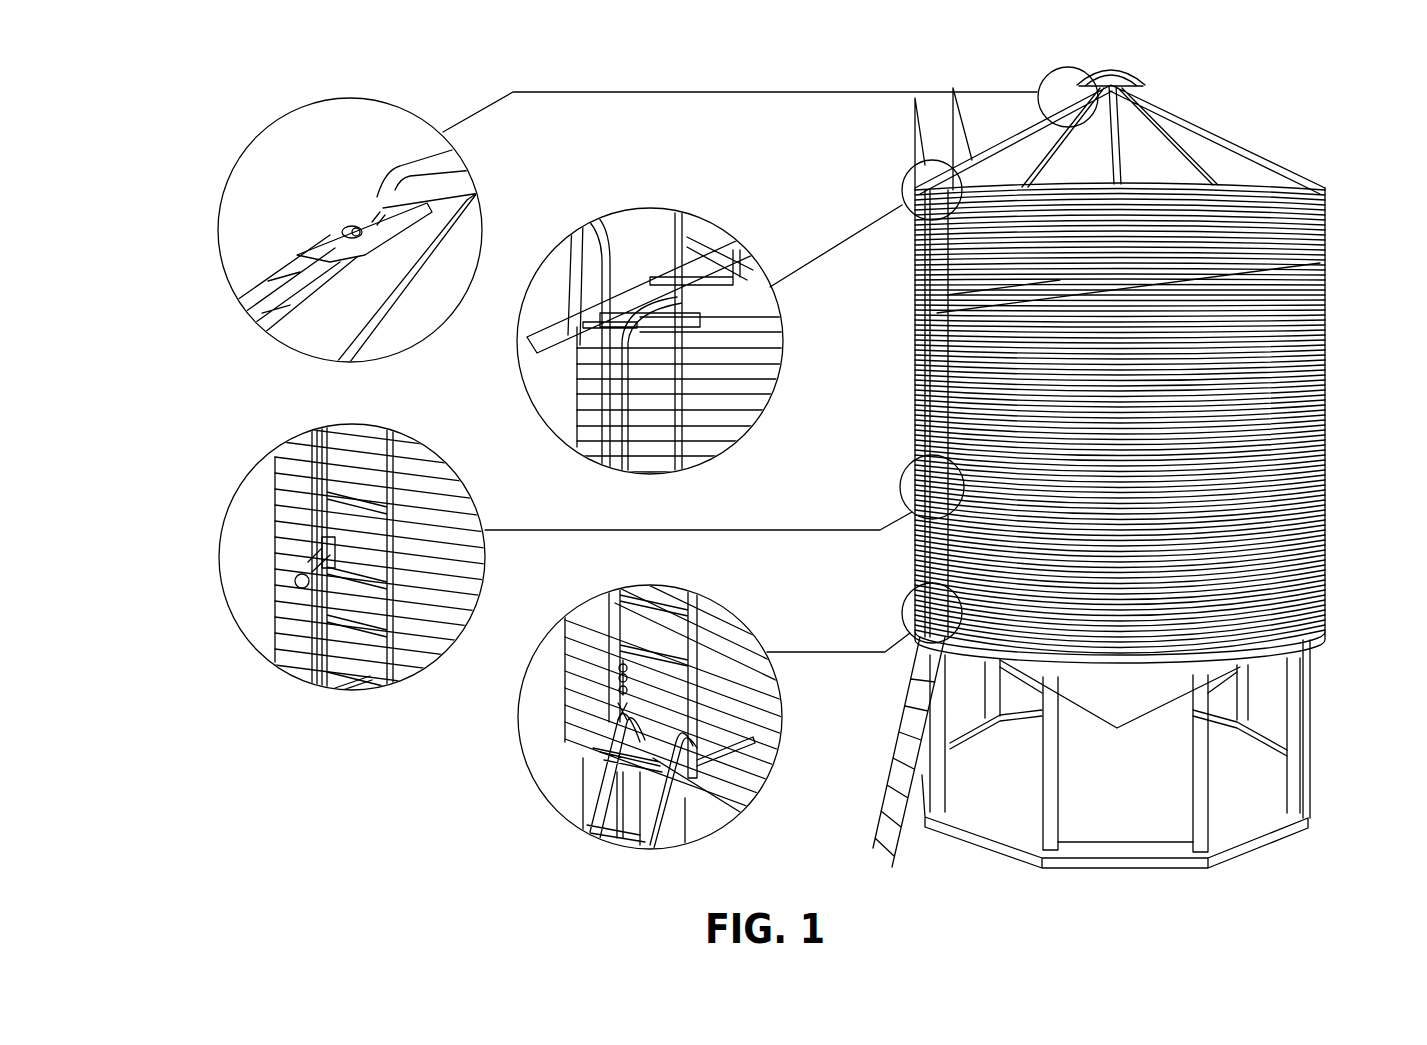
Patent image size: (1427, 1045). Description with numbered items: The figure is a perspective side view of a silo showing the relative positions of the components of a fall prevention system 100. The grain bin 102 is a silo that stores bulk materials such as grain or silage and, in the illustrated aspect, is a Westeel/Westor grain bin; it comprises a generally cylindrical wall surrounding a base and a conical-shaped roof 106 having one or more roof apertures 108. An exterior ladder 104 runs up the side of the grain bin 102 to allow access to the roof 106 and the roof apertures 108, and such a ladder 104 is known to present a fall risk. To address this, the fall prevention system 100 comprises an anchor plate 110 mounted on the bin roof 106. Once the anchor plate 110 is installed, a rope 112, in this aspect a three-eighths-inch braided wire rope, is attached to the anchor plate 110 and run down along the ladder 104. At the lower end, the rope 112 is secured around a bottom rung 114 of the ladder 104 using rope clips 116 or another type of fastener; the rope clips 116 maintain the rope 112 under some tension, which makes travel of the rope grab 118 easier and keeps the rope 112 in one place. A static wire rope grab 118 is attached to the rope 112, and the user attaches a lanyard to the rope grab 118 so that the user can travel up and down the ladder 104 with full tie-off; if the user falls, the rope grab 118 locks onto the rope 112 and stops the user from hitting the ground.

The fall prevention system 100 is at (160, 238).
The grain bin 102 is at (1252, 403).
The ladder 104 is at (1320, 263).
The roof 106 is at (1247, 153).
The roof aperture 108 is at (1125, 68).
The anchor plate 110 is at (377, 207).
The rope 112 is at (620, 347).
The bottom rung 114 is at (740, 745).
The rope clips 116 is at (620, 683).
The rope grab 118 is at (317, 548).